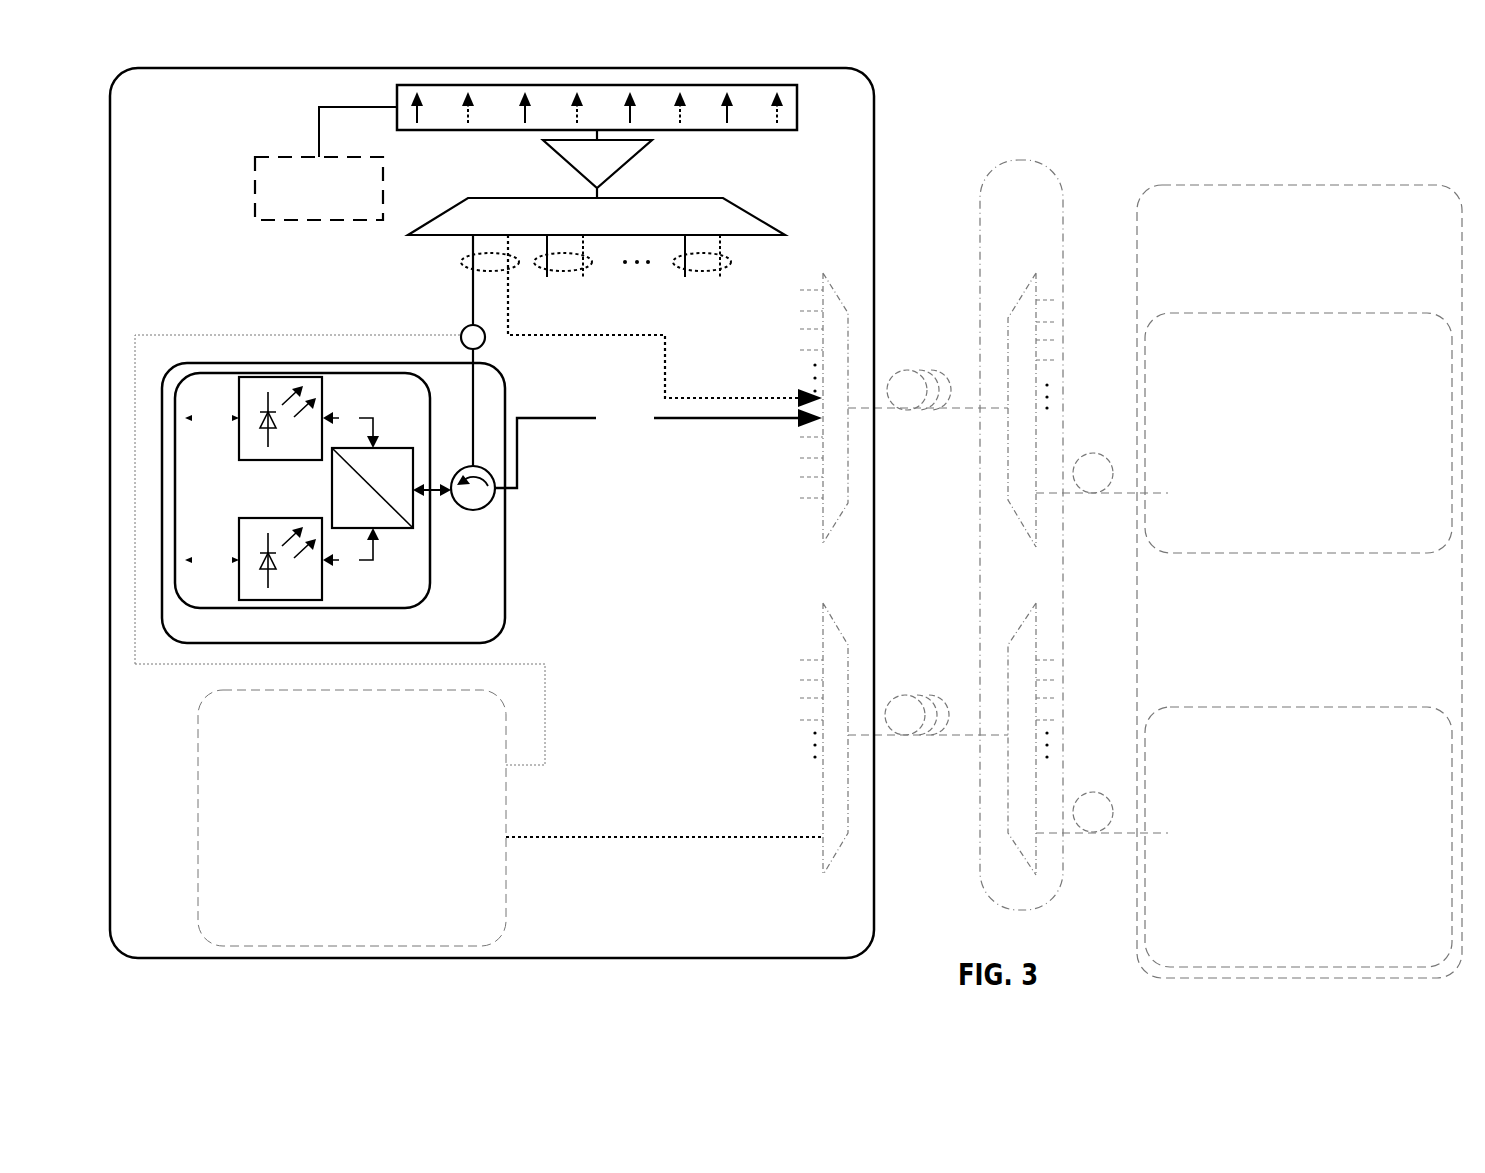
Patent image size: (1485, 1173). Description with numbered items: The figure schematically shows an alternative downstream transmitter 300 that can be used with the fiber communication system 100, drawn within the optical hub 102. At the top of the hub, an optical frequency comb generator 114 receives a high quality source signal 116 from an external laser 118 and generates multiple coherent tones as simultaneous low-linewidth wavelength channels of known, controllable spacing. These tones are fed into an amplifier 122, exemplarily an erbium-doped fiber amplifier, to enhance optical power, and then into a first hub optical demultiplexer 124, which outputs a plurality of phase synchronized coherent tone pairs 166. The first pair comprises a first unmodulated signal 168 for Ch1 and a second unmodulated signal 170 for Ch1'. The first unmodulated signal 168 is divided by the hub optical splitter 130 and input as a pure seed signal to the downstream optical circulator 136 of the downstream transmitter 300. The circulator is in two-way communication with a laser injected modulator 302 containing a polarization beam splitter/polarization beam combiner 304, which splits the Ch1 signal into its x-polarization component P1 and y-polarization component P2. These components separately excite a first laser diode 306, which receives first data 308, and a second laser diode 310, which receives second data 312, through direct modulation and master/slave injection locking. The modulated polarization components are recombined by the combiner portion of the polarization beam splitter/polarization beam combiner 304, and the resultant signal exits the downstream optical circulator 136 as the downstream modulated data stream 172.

The fiber communication system 100 is at (942, 126).
The optical hub 102 is at (150, 105).
The optical frequency comb generator 114 is at (797, 110).
The high quality source signal 116 is at (319, 130).
The external laser 118 is at (334, 200).
The amplifier 122 is at (610, 166).
The first hub optical demultiplexer 124 is at (770, 220).
The hub optical splitter 130 is at (486, 342).
The downstream optical circulator 136 is at (472, 510).
The phase synchronized coherent tone pairs 166 is at (442, 259).
The first unmodulated signal 168 is at (473, 297).
The second unmodulated signal 170 is at (665, 375).
The downstream modulated data stream 172 is at (682, 420).
The downstream transmitter 300 is at (433, 635).
The laser injected modulator 302 is at (432, 585).
The polarization beam splitter/polarization beam combiner 304 is at (402, 485).
The first laser diode 306 is at (325, 405).
The first data 308 is at (212, 427).
The second laser diode 310 is at (325, 585).
The second data 312 is at (212, 555).